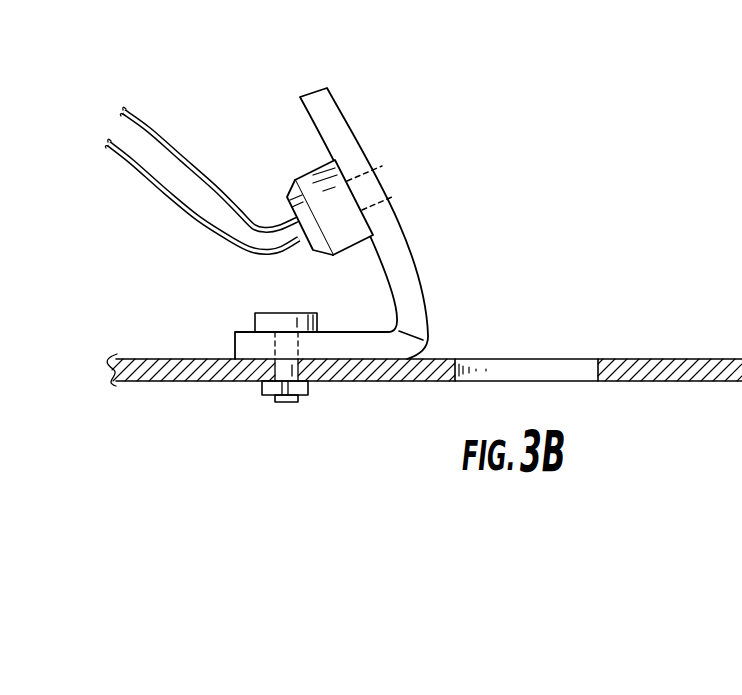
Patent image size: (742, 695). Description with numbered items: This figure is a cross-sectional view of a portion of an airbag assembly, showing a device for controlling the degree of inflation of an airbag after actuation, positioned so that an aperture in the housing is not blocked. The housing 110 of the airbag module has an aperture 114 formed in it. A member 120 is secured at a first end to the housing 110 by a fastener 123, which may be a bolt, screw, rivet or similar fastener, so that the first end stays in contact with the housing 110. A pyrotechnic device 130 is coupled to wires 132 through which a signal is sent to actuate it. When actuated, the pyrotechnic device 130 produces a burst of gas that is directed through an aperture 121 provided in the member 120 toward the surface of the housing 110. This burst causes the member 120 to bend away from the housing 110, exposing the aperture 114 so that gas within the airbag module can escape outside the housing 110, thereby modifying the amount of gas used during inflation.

The housing 110 is at (437, 359).
The aperture 114 is at (547, 372).
The member 120 is at (388, 213).
The aperture 121 is at (381, 181).
The fastener 123 is at (277, 322).
The pyrotechnic device 130 is at (313, 177).
The wires 132 is at (148, 187).